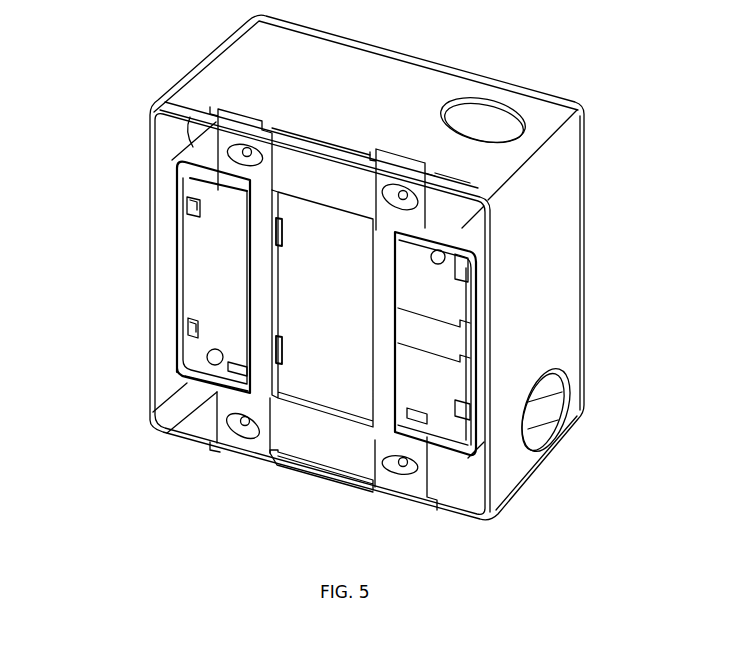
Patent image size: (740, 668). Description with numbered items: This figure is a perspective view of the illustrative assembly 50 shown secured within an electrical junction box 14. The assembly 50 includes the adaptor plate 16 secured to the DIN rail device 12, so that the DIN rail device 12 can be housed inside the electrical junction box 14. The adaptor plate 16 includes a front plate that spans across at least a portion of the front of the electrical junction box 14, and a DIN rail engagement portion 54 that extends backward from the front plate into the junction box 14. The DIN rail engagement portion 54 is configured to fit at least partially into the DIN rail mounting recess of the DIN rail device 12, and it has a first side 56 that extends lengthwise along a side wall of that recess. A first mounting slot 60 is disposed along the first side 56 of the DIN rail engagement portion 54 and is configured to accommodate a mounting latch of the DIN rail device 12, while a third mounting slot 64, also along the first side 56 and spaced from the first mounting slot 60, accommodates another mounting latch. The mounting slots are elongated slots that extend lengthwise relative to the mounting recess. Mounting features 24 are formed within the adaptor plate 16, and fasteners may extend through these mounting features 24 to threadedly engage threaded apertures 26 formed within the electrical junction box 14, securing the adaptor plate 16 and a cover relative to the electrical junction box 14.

The assembly 50 is at (130, 253).
The DIN rail device 12 is at (480, 222).
The electrical junction box 14 is at (413, 73).
The adaptor plate 16 is at (387, 362).
The mounting features 24 is at (276, 148).
The threaded apertures 26 is at (247, 150).
The DIN rail engagement portion 54 is at (341, 335).
The first side 56 is at (276, 273).
The first mounting slot 60 is at (281, 234).
The third mounting slot 64 is at (281, 351).